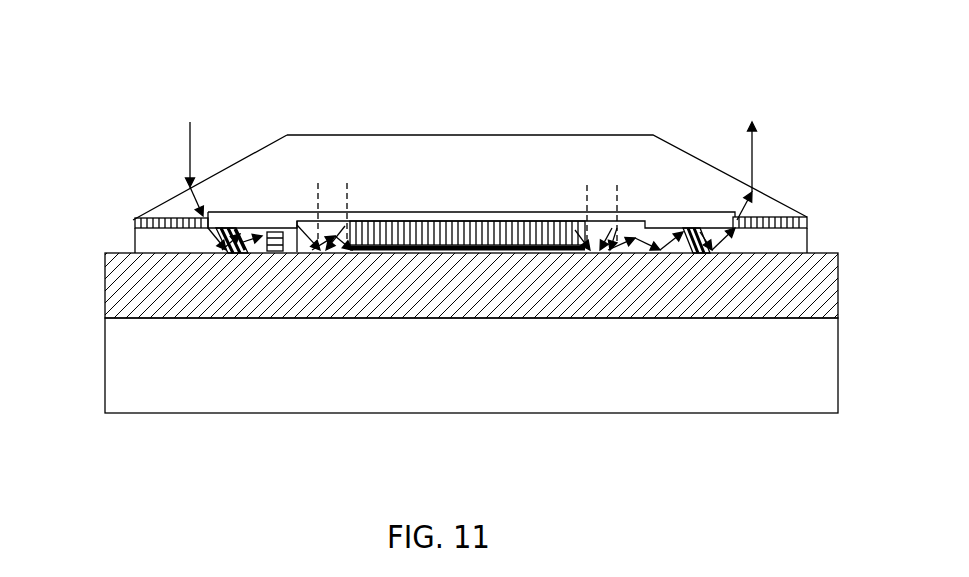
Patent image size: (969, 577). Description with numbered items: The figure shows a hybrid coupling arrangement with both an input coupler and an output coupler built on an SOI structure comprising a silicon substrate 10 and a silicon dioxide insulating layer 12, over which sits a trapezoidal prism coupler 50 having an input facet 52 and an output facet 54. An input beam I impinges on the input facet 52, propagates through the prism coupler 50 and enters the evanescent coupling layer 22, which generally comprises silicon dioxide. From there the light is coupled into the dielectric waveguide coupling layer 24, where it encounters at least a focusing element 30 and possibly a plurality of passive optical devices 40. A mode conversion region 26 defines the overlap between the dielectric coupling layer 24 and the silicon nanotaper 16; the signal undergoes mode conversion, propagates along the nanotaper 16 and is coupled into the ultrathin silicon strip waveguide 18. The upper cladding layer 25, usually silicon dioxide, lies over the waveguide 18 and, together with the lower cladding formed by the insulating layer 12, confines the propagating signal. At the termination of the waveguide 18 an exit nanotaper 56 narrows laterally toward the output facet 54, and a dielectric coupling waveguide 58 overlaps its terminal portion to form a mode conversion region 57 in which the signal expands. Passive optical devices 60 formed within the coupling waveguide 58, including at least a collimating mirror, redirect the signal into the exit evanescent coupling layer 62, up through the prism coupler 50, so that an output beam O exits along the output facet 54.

The silicon substrate 10 is at (112, 365).
The silicon dioxide insulating layer 12 is at (112, 288).
The silicon nanotaper 16 is at (320, 255).
The ultrathin silicon strip waveguide 18 is at (467, 255).
The evanescent coupling layer 22 is at (133, 220).
The dielectric waveguide coupling layer 24 is at (143, 238).
The upper cladding layer 25 is at (530, 225).
The mode conversion region 26 is at (336, 228).
The focusing element 30 is at (225, 255).
The passive optical devices 40 is at (278, 255).
The trapezoidal prism coupler 50 is at (318, 155).
The input facet 52 is at (245, 153).
The output facet 54 is at (693, 145).
The exit nanotaper 56 is at (617, 255).
The mode conversion region 57 is at (611, 227).
The dielectric coupling waveguide 58 is at (787, 243).
The passive optical devices 60 is at (695, 255).
The exit evanescent coupling layer 62 is at (813, 217).
The input beam I is at (217, 168).
The output beam O is at (758, 152).